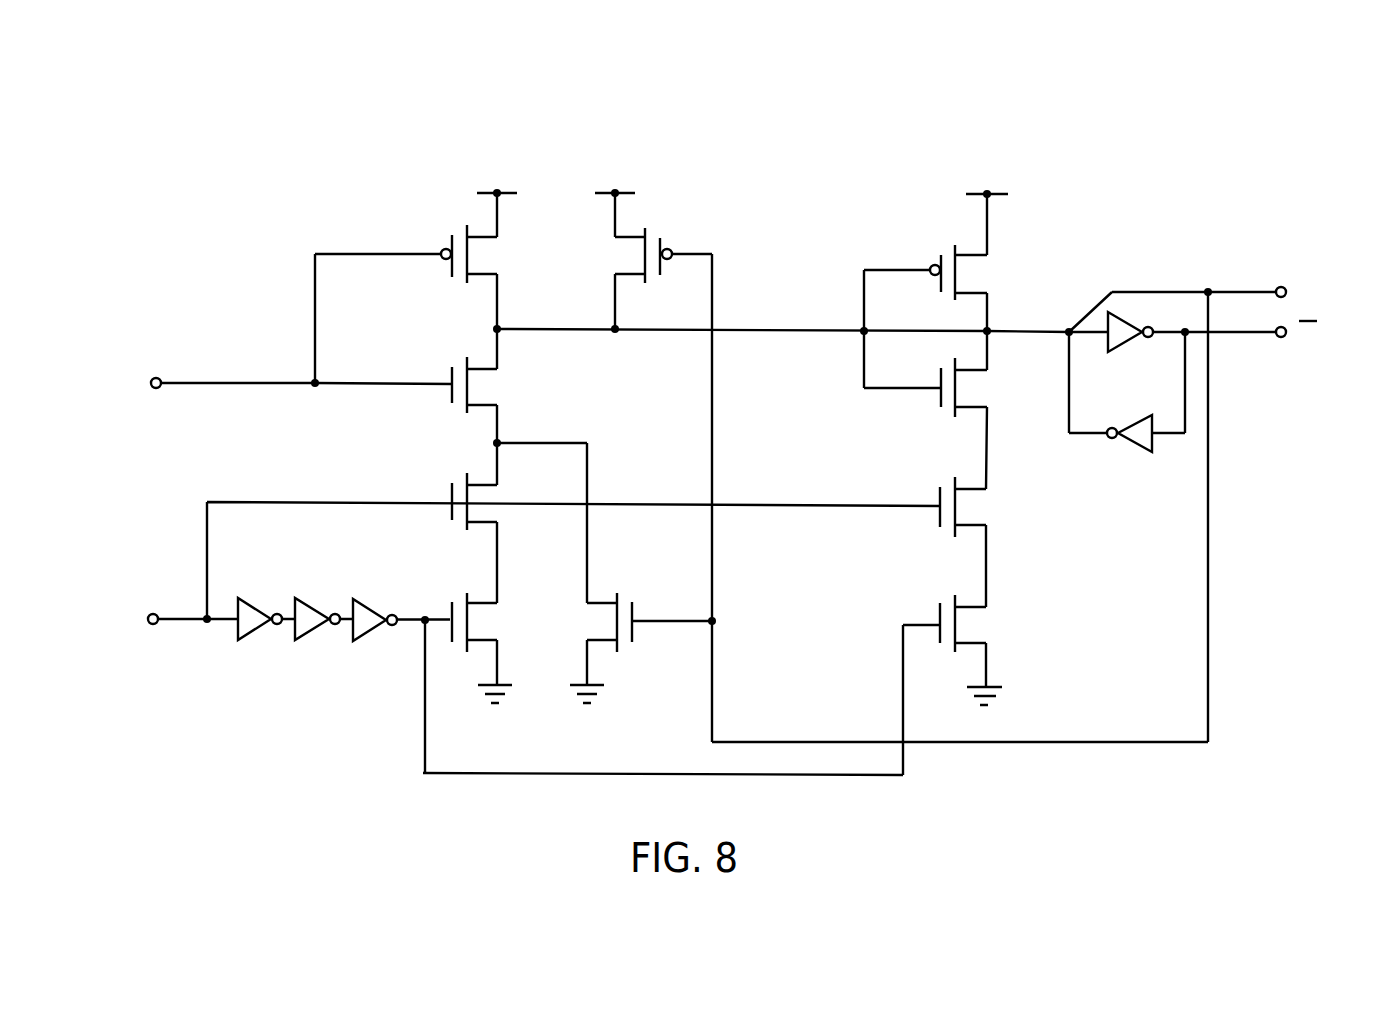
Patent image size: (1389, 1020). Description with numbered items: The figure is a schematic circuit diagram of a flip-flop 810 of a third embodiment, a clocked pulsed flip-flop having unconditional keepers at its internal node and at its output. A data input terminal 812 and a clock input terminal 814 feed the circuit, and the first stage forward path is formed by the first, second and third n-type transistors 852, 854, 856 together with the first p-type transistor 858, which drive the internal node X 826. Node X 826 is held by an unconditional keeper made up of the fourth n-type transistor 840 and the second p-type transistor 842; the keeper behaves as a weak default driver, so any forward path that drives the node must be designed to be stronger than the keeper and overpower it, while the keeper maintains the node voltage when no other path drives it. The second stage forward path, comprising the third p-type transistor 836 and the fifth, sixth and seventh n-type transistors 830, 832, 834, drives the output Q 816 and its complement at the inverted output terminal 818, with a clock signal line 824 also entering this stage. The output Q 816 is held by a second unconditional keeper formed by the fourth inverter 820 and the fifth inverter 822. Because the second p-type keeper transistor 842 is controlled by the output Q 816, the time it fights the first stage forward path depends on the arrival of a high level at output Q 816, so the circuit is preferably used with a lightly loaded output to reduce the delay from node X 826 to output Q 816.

The flip-flop circuit 810 is at (1159, 108).
The data input terminal D 812 is at (133, 365).
The clock input terminal CLK0 814 is at (123, 598).
The output Q 816 is at (1308, 275).
The inverted output terminal Q-bar 818 is at (1308, 350).
The inverter Inv4 820 is at (1133, 387).
The inverter Inv5 822 is at (1122, 495).
The clock signal line CLK3 824 is at (583, 752).
The node X 826 is at (785, 298).
The transistor Mn5 830 is at (1017, 617).
The transistor Mn6 832 is at (1020, 502).
The transistor Mn7 834 is at (1017, 392).
The transistor Mp3 836 is at (1020, 273).
The transistor Mn4 840 is at (633, 558).
The transistor Mp2 842 is at (685, 203).
The transistor Mn1 852 is at (432, 560).
The transistor Mn2 854 is at (430, 445).
The transistor Mn3 856 is at (427, 330).
The transistor Mp1 858 is at (425, 202).